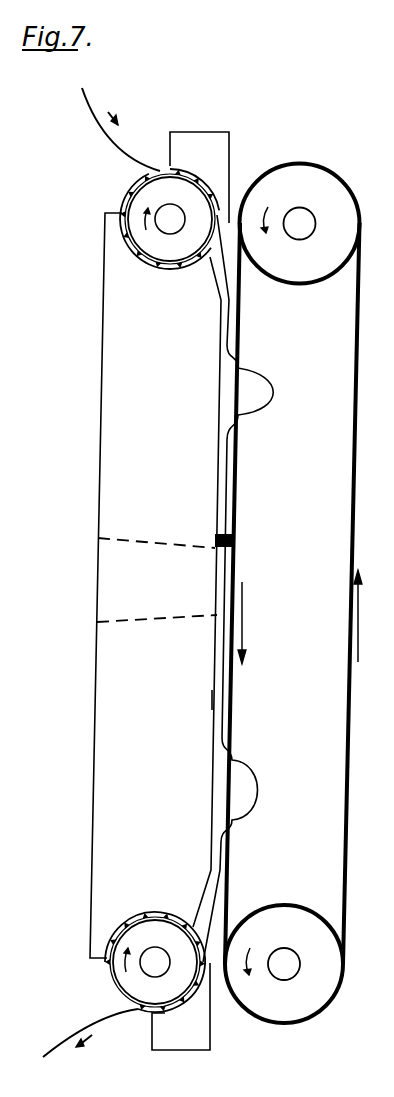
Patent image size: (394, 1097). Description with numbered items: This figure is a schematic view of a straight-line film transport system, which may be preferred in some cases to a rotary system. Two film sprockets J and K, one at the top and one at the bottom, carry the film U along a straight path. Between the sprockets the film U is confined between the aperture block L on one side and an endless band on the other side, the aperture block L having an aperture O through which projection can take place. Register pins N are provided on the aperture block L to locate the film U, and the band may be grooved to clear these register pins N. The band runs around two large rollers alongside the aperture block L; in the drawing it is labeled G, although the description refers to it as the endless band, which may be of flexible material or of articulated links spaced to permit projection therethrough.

The film sprocket J is at (143, 202).
The film sprocket K is at (130, 974).
The aperture block L is at (142, 463).
The register pins N is at (212, 537).
The aperture O is at (213, 587).
The film U is at (220, 700).
The conveyor belt G is at (355, 342).